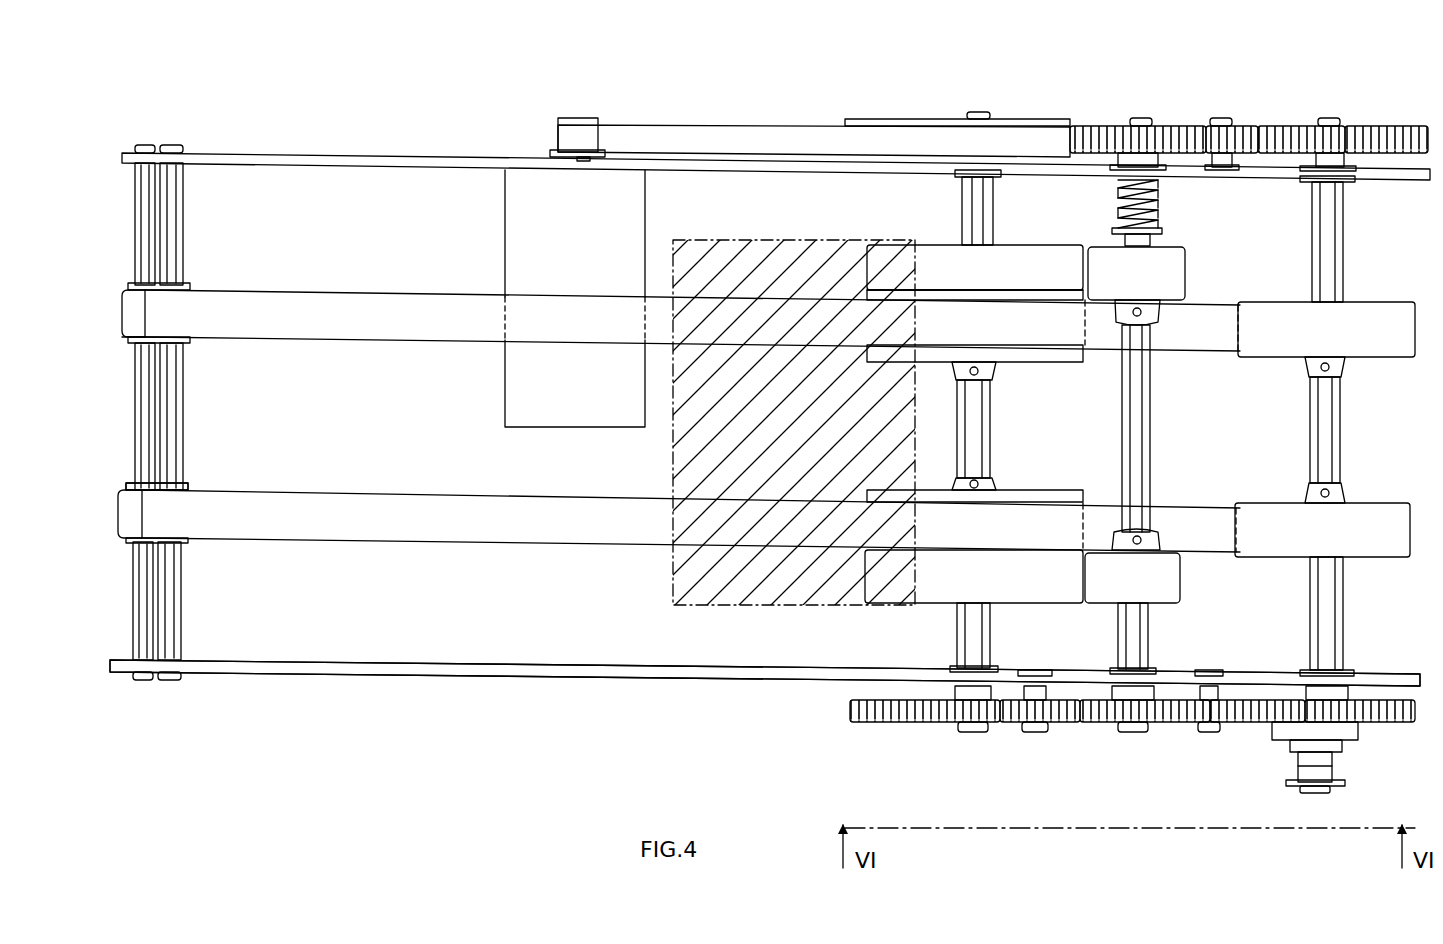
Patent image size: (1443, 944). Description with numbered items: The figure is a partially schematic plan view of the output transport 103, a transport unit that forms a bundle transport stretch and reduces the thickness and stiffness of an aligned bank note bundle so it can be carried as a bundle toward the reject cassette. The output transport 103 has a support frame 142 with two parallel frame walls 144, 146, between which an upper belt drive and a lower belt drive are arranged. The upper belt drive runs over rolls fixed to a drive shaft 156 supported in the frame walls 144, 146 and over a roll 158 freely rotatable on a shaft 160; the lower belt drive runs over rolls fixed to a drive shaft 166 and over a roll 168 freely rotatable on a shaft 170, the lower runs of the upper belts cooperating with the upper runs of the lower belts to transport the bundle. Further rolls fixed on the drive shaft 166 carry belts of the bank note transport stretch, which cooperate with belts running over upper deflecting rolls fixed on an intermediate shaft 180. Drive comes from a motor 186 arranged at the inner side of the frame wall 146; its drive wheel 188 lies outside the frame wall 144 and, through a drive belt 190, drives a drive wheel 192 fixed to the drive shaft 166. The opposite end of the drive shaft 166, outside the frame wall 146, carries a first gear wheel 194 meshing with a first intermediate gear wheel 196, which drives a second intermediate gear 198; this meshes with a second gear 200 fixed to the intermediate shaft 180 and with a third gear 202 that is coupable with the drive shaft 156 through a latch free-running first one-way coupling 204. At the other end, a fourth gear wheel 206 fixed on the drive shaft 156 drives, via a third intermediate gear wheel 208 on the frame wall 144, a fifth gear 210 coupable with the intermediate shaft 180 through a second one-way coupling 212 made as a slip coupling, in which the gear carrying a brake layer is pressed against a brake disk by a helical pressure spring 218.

The output transport 103 is at (777, 113).
The support frame 142 is at (290, 672).
The frame wall 144 is at (265, 163).
The frame wall 146 is at (410, 672).
The drive shaft 156 is at (1318, 420).
The roll 158 is at (182, 483).
The shaft 160 is at (165, 575).
The drive shaft 166 is at (980, 205).
The roll 168 is at (135, 340).
The shaft 170 is at (140, 622).
The intermediate shaft 180 is at (1135, 450).
The motor 186 is at (505, 386).
The drive wheel 188 is at (589, 118).
The drive belt 190 is at (728, 125).
The drive wheel 192 is at (895, 119).
The first gear wheel 194 is at (935, 722).
The first intermediate gear wheel 196 is at (1058, 722).
The second intermediate gear 198 is at (1232, 722).
The second gear 200 is at (1150, 722).
The third gear 202 is at (1400, 722).
The first one-way coupling 204 is at (1278, 762).
The fourth gear wheel 206 is at (1370, 126).
The third intermediate gear wheel 208 is at (1240, 126).
The fifth gear 210 is at (1130, 126).
The second one-way coupling 212 is at (1165, 118).
The helical pressure spring 218 is at (1118, 205).